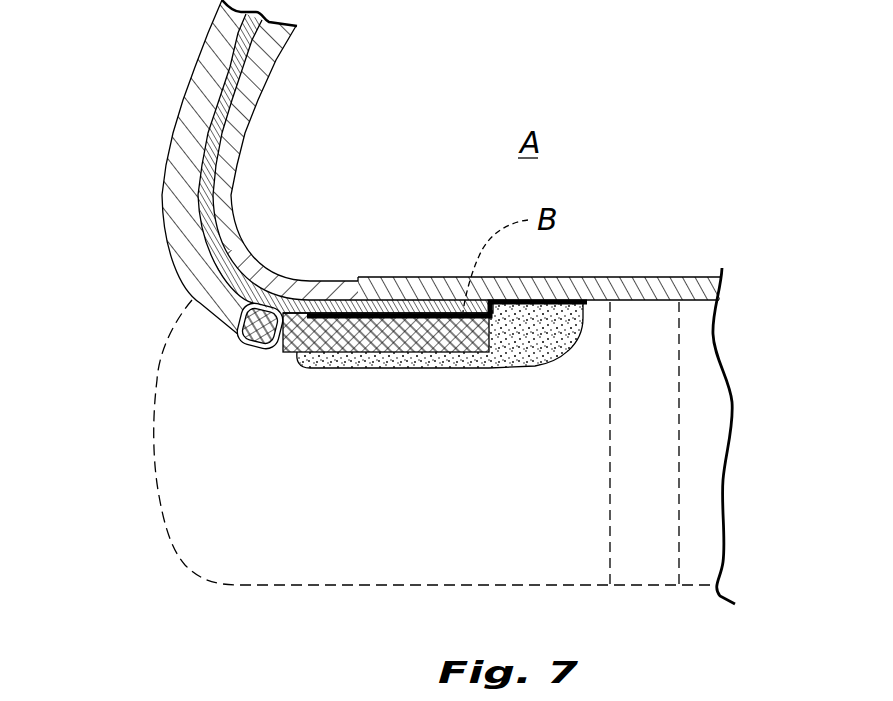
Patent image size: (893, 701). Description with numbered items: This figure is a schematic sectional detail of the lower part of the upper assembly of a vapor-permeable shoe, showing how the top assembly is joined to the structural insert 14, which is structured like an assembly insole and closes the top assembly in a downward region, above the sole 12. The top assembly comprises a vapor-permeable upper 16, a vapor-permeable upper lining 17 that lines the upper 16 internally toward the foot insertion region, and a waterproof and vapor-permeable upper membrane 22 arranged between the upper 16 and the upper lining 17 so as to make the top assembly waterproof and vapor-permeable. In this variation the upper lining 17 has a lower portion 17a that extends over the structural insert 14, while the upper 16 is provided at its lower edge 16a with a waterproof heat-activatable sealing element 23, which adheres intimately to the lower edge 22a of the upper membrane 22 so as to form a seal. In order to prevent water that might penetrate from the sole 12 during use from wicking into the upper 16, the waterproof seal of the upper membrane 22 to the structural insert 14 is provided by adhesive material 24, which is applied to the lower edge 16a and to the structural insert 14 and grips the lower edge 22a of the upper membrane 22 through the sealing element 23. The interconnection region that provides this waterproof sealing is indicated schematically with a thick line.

The sole 12 is at (148, 370).
The structural insert 14 is at (633, 263).
The vapor-permeable upper 16 is at (286, 326).
The lower edge of the upper 16a is at (403, 352).
The vapor-permeable upper lining 17 is at (324, 158).
The inner layer flange portion 17a is at (342, 288).
The waterproof and vapor-permeable upper membrane 22 is at (271, 163).
The lower edge of the upper membrane 22a is at (433, 300).
The waterproof heat-activatable sealing element 23 is at (330, 352).
The adhesive material 24 is at (531, 353).